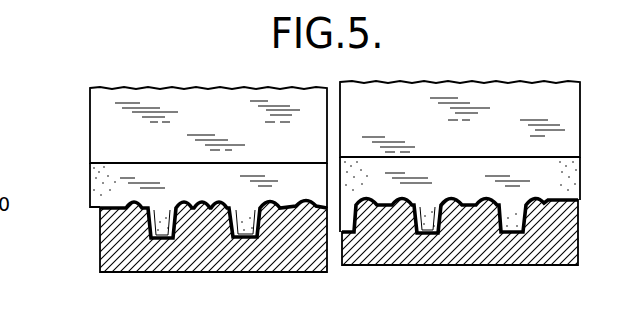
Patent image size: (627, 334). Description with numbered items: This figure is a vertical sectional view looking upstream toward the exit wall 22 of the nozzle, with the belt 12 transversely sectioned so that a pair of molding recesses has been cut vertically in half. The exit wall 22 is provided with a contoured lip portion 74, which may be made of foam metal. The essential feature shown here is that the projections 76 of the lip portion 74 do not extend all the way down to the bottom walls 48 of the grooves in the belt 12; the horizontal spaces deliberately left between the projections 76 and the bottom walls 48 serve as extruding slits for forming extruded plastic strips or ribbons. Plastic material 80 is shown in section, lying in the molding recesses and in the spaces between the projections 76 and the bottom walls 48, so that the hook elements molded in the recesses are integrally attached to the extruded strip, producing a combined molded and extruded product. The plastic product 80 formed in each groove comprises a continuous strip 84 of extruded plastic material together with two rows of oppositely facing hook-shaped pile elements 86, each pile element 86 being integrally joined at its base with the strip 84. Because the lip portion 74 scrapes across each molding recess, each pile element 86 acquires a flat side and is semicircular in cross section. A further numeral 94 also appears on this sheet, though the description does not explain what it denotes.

The belt 12 is at (387, 253).
The exit wall 22 is at (187, 98).
The bottom walls 48 is at (170, 242).
The lip portion 74 is at (563, 171).
The projections 76 is at (244, 221).
The plastic material 80 is at (153, 216).
The strip 84 is at (248, 242).
The pile elements 86 is at (263, 224).
The groove portion 94 is at (508, 283).